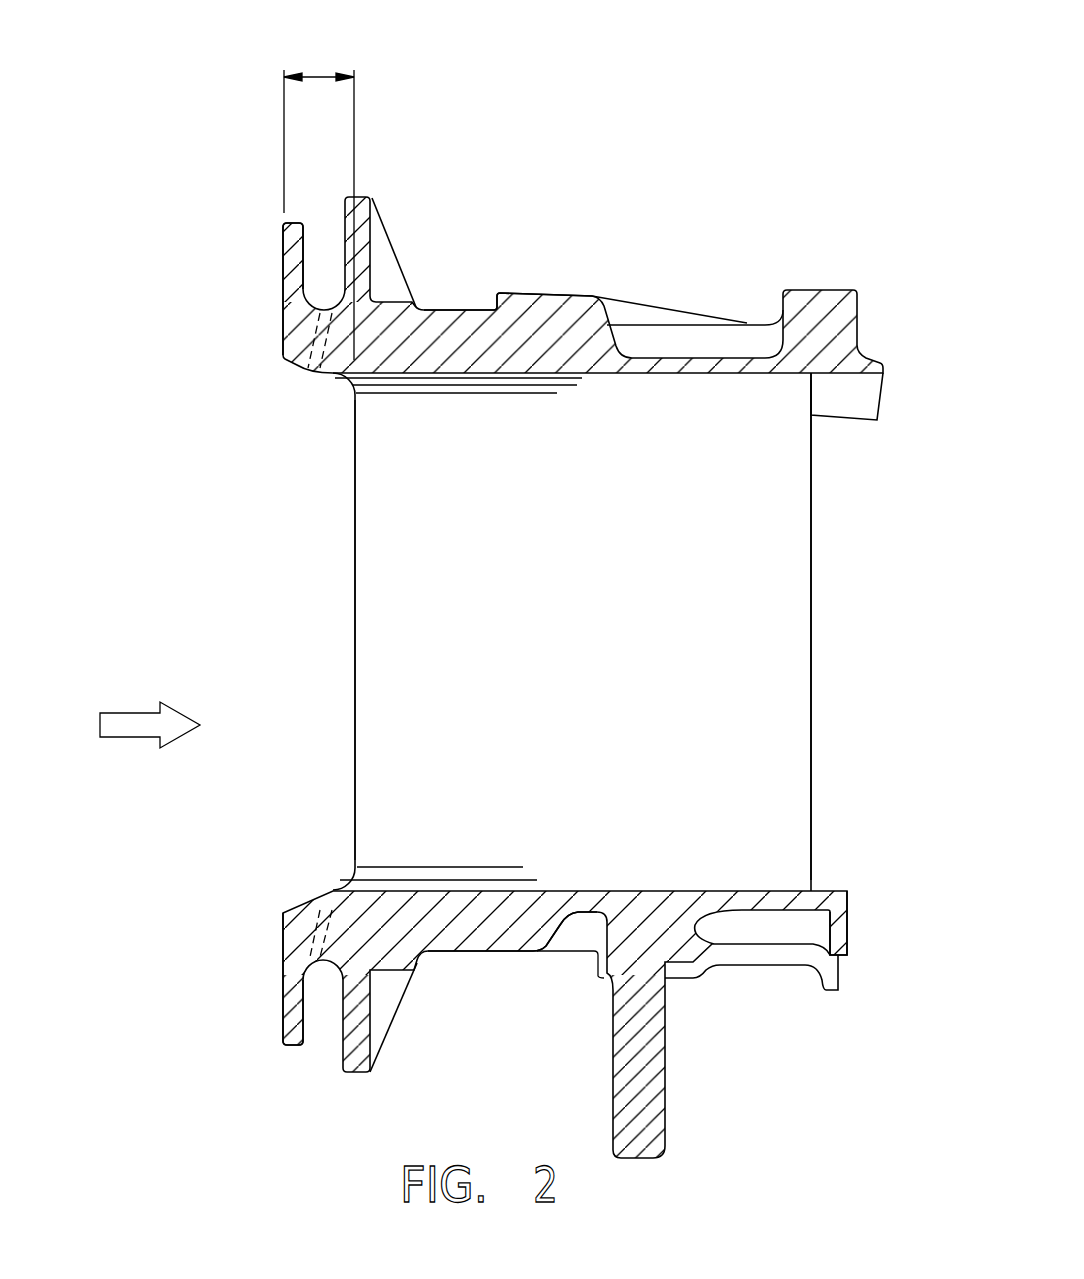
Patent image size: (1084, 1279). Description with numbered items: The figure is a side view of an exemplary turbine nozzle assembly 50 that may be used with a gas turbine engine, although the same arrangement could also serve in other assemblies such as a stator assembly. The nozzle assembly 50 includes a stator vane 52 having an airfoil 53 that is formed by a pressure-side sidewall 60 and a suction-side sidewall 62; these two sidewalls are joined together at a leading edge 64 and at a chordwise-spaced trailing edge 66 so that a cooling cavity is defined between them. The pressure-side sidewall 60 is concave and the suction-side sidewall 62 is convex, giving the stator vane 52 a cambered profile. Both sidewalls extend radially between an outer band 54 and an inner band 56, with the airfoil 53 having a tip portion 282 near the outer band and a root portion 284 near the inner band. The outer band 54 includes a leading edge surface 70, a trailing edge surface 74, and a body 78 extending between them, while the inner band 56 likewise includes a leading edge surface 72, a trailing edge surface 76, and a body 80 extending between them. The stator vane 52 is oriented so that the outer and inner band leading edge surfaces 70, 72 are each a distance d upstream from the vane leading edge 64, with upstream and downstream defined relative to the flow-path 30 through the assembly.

The flow-path 30 is at (130, 713).
The turbine nozzle assembly 50 is at (240, 68).
The stator vane 52 is at (560, 677).
The airfoil 53 is at (612, 636).
The outer band 54 is at (702, 337).
The inner band 56 is at (515, 950).
The pressure-side sidewall 60 is at (811, 498).
The suction-side sidewall 62 is at (780, 717).
The leading edge 64 is at (355, 593).
The trailing edge 66 is at (811, 628).
The leading edge surface 70 is at (282, 282).
The leading edge surface 72 is at (285, 993).
The trailing edge surface 74 is at (882, 395).
The trailing edge surface 76 is at (850, 940).
The body 78 is at (558, 338).
The body 80 is at (507, 930).
The tip portion 282 is at (566, 405).
The root portion 284 is at (607, 882).
The distance d is at (320, 73).